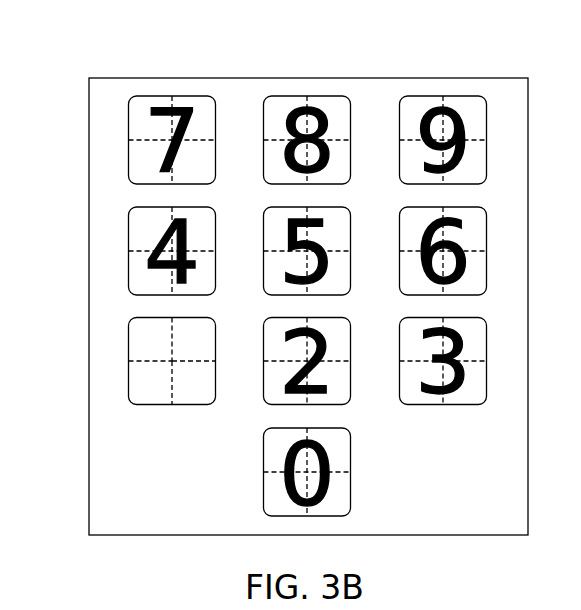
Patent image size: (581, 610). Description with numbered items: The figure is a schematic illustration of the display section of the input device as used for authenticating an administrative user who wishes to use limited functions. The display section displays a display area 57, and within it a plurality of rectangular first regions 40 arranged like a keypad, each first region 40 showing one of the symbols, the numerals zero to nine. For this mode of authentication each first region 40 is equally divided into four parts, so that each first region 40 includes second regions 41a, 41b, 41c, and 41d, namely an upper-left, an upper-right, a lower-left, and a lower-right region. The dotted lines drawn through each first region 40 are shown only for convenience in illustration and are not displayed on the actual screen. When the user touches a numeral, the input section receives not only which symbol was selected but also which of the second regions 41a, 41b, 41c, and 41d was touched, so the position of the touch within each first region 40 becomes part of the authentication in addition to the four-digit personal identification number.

The display area 57 is at (370, 92).
The first region 40 is at (176, 389).
The second region 41a is at (133, 343).
The second region 41b is at (207, 343).
The second region 41c is at (139, 402).
The second region 41d is at (203, 402).